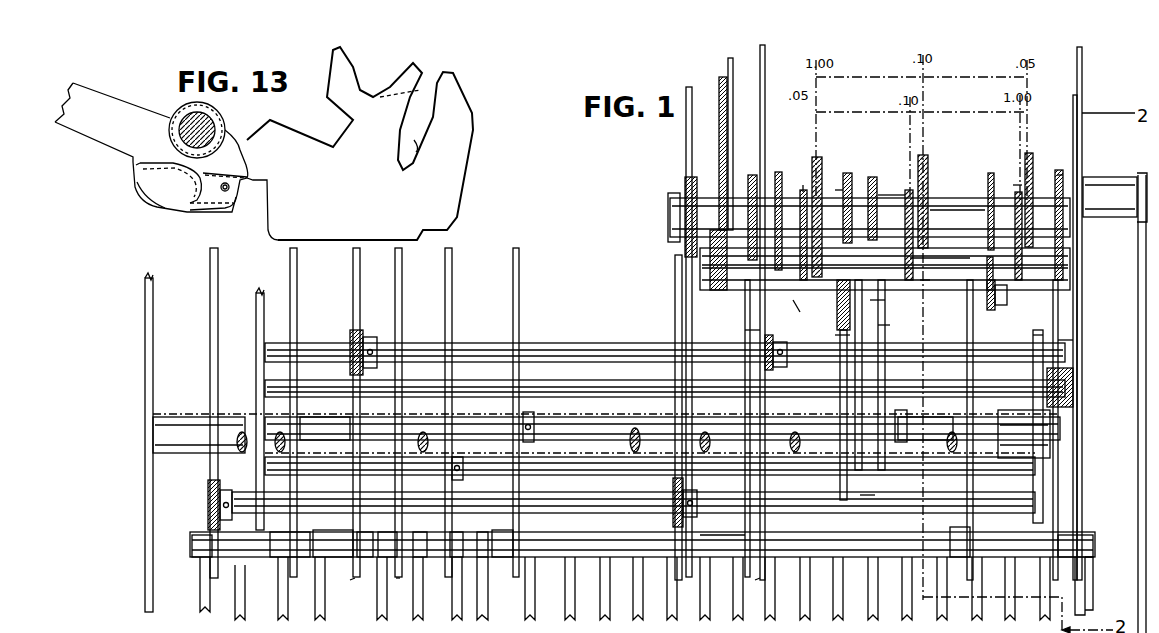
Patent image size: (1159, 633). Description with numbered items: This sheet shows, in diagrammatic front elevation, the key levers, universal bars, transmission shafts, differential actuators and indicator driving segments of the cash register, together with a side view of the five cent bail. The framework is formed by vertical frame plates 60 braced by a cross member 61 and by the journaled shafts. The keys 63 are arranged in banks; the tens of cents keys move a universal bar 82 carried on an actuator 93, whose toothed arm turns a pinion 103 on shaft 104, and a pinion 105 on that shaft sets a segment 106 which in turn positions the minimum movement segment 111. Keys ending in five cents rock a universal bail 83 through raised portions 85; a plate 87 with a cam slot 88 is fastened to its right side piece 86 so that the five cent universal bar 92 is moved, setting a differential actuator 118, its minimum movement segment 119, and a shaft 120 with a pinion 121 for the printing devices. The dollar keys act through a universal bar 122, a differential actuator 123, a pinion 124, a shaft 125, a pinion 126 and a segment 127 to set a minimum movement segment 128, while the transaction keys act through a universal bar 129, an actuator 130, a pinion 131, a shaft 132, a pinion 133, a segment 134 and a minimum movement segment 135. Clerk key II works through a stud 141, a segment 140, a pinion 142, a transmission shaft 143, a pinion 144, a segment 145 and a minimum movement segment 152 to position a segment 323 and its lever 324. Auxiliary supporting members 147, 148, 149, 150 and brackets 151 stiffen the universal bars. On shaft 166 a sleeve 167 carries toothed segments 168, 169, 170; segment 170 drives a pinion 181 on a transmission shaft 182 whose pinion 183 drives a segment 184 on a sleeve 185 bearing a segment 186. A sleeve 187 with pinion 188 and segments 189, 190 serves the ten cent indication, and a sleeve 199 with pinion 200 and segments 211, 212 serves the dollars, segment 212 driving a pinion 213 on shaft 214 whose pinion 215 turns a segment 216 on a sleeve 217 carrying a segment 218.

In FIG. 1, the vertical frame plates 60 is at (765, 52).
In FIG. 1, the cross member 61 is at (193, 417).
In FIG. 1, the keys 63 is at (602, 580).
In FIG. 1, the universal bar 82 is at (655, 540).
In FIG. 13, the universal bail 83 is at (150, 208).
In FIG. 13, the raised portion 85 is at (133, 170).
In FIG. 13, the right side piece 86 is at (246, 190).
In FIG. 13, the plate 87 is at (470, 163).
In FIG. 13, the cam slot 88 is at (418, 144).
In FIG. 1, the universal bar 92 is at (1068, 535).
In FIG. 1, the actuator 93 is at (519, 290).
In FIG. 1, the pinion 103 is at (520, 415).
In FIG. 1, the shaft 104 is at (565, 430).
In FIG. 1, the pinion 105 is at (905, 425).
In FIG. 1, the segment 106 is at (885, 324).
In FIG. 1, the segment 111 is at (880, 298).
In FIG. 1, the differential actuator 118 is at (1033, 332).
In FIG. 1, the minimum movement segment 119 is at (1065, 340).
In FIG. 1, the shaft 120 is at (1015, 388).
In FIG. 1, the pinion 121 is at (1070, 375).
In FIG. 1, the universal bar 122 is at (470, 529).
In FIG. 1, the differential actuator 123 is at (452, 307).
In FIG. 1, the pinion 124 is at (463, 447).
In FIG. 1, the shaft 125 is at (565, 470).
In FIG. 1, the pinion 126 is at (850, 488).
In FIG. 1, the segment 127 is at (835, 376).
In FIG. 1, the minimum movement segment 128 is at (848, 335).
In FIG. 1, the universal bar 129 is at (325, 525).
In FIG. 1, the differential actuator 130 is at (350, 410).
In FIG. 1, the pinion 131 is at (362, 330).
In FIG. 1, the shaft 132 is at (418, 343).
In FIG. 1, the pinion 133 is at (776, 342).
In FIG. 1, the segment 134 is at (772, 325).
In FIG. 1, the minimum movement segment 135 is at (745, 329).
In FIG. 1, the segment 140 is at (210, 341).
In FIG. 1, the stud 141 is at (192, 553).
In FIG. 1, the pinion 142 is at (208, 500).
In FIG. 1, the transmission shaft 143 is at (315, 500).
In FIG. 1, the pinion 144 is at (683, 486).
In FIG. 1, the segment 145 is at (675, 266).
In FIG. 1, the auxiliary supporting member 147 is at (972, 526).
In FIG. 1, the auxiliary supporting member 148 is at (742, 530).
In FIG. 1, the auxiliary supporting member 149 is at (398, 580).
In FIG. 1, the auxiliary supporting member 150 is at (272, 540).
In FIG. 1, the brackets 151 is at (365, 585).
In FIG. 1, the minimum movement segment 152 is at (694, 300).
In FIG. 1, the shaft 166 is at (668, 216).
In FIG. 1, the sleeve 167 is at (1040, 200).
In FIG. 1, the toothed segment 168 is at (1075, 228).
In FIG. 1, the toothed segment 169 is at (1029, 153).
In FIG. 1, the toothed segment 170 is at (1060, 172).
In FIG. 1, the pinion 181 is at (1075, 272).
In FIG. 1, the transmission shaft 182 is at (955, 268).
In FIG. 1, the pinion 183 is at (785, 290).
In FIG. 1, the toothed segment 184 is at (777, 172).
In FIG. 1, the sleeve 185 is at (803, 190).
In FIG. 1, the toothed segment 186 is at (803, 185).
In FIG. 1, the sleeve 187 is at (955, 205).
In FIG. 1, the pinion 188 is at (878, 195).
In FIG. 1, the toothed segment 189 is at (925, 155).
In FIG. 1, the toothed segment 190 is at (906, 192).
In FIG. 1, the sleeve 199 is at (846, 173).
In FIG. 1, the pinion 200 is at (871, 177).
In FIG. 1, the toothed segment 211 is at (818, 157).
In FIG. 1, the toothed segment 212 is at (836, 190).
In FIG. 1, the pinion 213 is at (840, 315).
In FIG. 1, the shaft 214 is at (925, 290).
In FIG. 1, the pinion 215 is at (998, 306).
In FIG. 1, the toothed segment 216 is at (990, 173).
In FIG. 1, the sleeve 217 is at (1017, 192).
In FIG. 1, the toothed segment 218 is at (1016, 185).
In FIG. 1, the segment 323 is at (700, 158).
In FIG. 1, the lever 324 is at (686, 139).